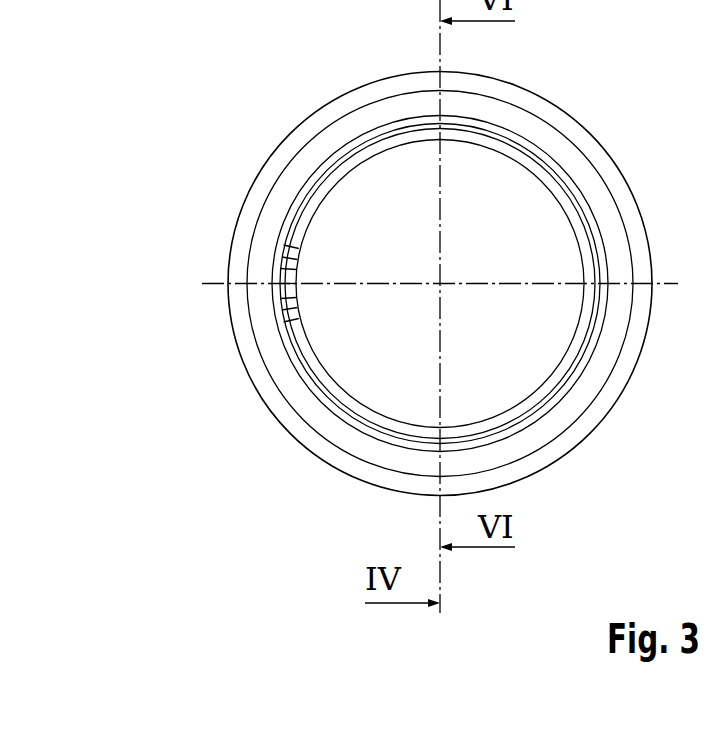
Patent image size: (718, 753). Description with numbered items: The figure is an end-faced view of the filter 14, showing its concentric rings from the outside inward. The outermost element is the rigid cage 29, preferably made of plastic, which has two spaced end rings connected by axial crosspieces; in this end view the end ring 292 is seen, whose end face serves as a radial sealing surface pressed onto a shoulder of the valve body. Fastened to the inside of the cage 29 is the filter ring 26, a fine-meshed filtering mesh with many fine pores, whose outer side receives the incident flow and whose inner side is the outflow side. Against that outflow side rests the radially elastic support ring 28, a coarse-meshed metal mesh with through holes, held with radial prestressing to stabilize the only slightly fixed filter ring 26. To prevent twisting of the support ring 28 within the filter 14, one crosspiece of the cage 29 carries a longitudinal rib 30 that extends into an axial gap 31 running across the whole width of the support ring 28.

The filter 14 is at (581, 86).
The cage 29 is at (294, 125).
The end ring 292 is at (600, 196).
The filter ring 26 is at (326, 389).
The support ring 28 is at (314, 366).
The longitudinal rib 30 is at (292, 283).
The axial gap 31 is at (291, 262).